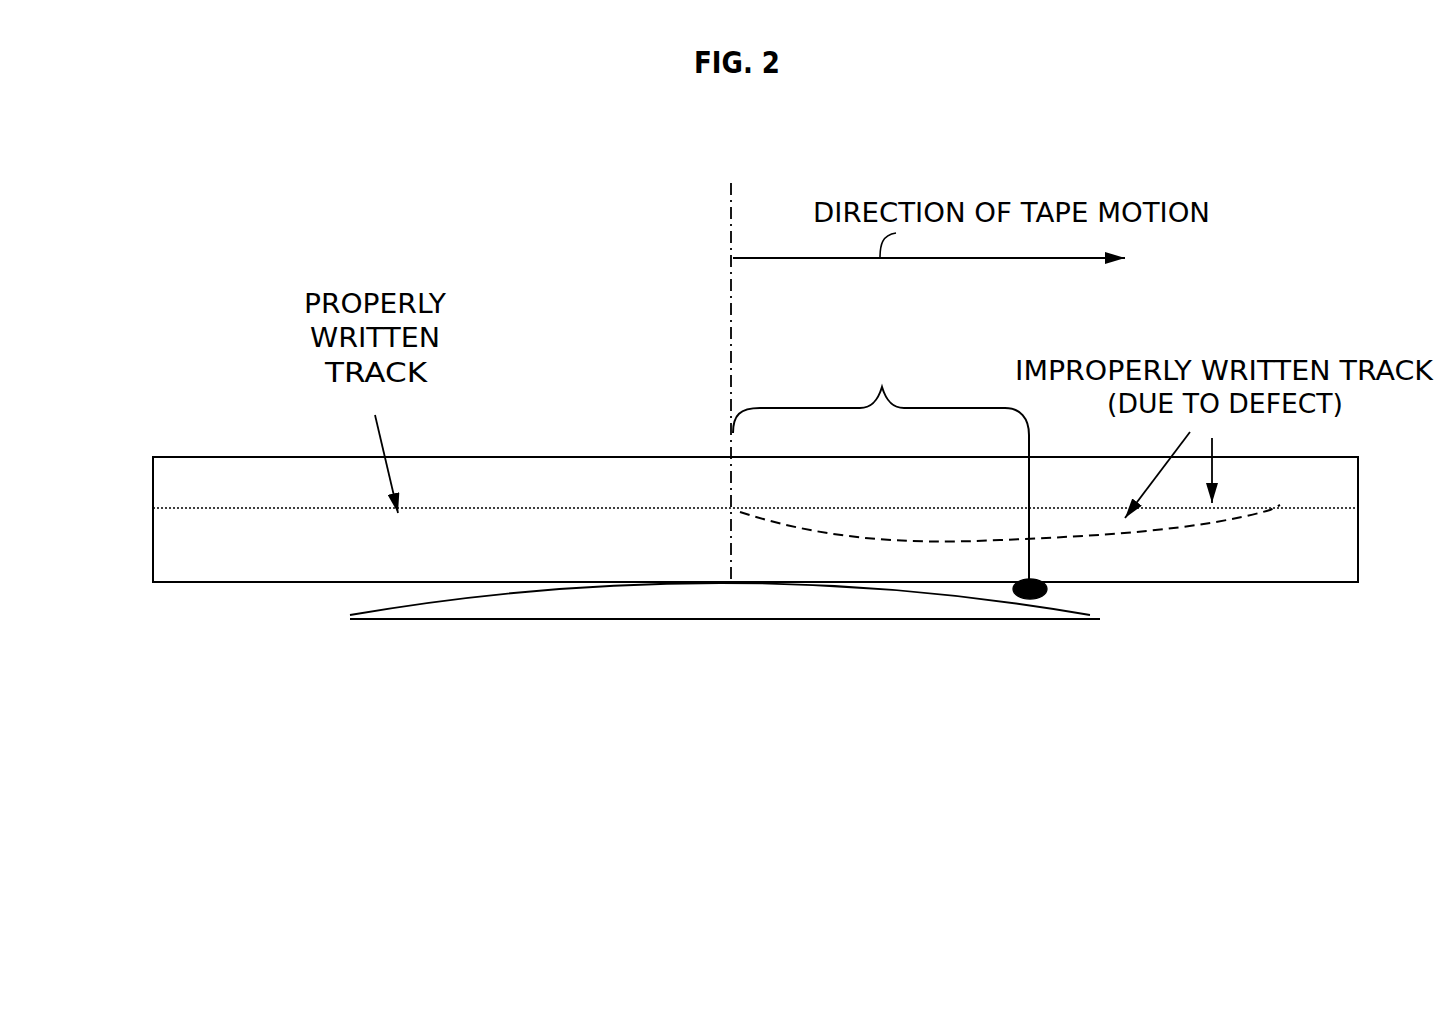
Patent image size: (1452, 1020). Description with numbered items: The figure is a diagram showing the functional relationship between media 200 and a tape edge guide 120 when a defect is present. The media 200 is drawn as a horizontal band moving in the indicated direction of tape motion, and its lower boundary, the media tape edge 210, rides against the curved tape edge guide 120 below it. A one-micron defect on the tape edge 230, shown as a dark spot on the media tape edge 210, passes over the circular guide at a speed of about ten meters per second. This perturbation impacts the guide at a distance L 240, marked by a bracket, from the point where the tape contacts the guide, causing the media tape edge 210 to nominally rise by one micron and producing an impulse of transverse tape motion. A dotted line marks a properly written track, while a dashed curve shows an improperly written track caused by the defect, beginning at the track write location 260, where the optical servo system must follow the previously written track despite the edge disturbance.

The media 200 is at (755, 519).
The media tape edge 210 is at (273, 583).
The defect on the tape edge 230 is at (1052, 593).
The distance L 240 is at (881, 455).
The track write location 260 is at (733, 510).
The tape edge guide 120 is at (856, 607).